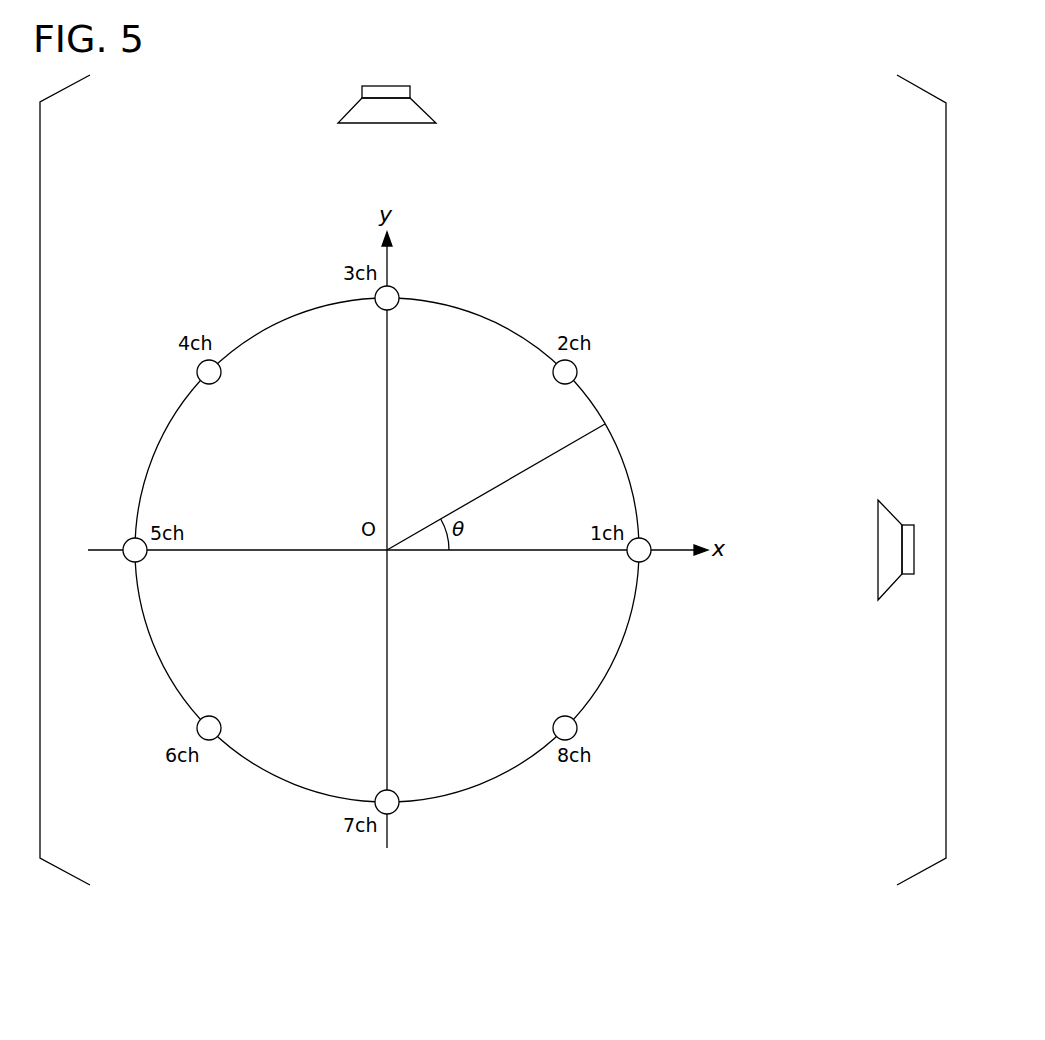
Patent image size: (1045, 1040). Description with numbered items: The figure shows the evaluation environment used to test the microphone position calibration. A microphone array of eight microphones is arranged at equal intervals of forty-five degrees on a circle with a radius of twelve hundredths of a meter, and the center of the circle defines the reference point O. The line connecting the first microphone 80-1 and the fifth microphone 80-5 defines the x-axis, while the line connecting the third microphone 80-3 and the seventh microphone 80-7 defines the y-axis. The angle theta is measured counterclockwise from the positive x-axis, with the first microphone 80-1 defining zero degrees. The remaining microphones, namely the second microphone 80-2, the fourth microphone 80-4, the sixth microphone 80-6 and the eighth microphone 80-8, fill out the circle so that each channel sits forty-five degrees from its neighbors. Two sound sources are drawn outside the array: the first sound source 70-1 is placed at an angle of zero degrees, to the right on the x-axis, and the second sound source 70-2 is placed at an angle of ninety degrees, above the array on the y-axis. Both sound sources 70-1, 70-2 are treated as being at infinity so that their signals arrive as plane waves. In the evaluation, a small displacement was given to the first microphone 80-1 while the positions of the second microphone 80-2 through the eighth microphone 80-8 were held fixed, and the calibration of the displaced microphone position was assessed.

The first sound source 70-1 is at (900, 527).
The second sound source 70-2 is at (422, 105).
The first (1ch) microphone 80-1 is at (396, 291).
The second (2ch) microphone 80-2 is at (577, 370).
The third (3ch) microphone 80-3 is at (647, 540).
The fourth (4ch) microphone 80-4 is at (196, 368).
The fifth (5ch) microphone 80-5 is at (126, 543).
The sixth (6ch) microphone 80-6 is at (216, 718).
The seventh (7ch) microphone 80-7 is at (396, 794).
The eighth (8ch) microphone 80-8 is at (577, 724).